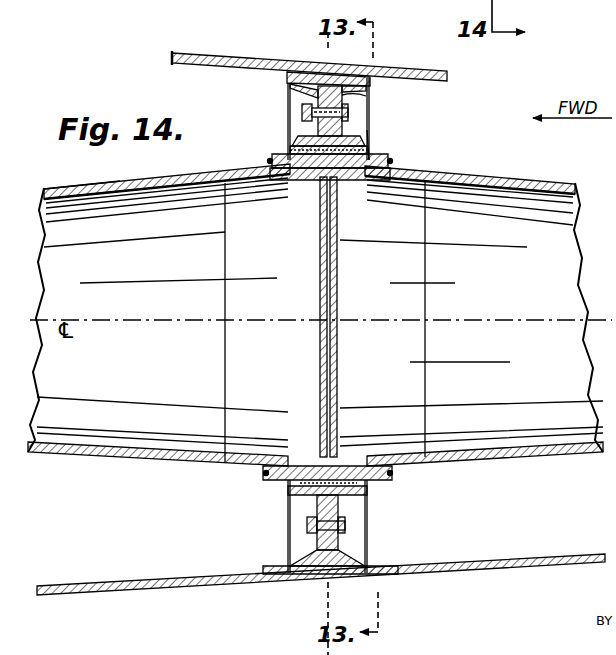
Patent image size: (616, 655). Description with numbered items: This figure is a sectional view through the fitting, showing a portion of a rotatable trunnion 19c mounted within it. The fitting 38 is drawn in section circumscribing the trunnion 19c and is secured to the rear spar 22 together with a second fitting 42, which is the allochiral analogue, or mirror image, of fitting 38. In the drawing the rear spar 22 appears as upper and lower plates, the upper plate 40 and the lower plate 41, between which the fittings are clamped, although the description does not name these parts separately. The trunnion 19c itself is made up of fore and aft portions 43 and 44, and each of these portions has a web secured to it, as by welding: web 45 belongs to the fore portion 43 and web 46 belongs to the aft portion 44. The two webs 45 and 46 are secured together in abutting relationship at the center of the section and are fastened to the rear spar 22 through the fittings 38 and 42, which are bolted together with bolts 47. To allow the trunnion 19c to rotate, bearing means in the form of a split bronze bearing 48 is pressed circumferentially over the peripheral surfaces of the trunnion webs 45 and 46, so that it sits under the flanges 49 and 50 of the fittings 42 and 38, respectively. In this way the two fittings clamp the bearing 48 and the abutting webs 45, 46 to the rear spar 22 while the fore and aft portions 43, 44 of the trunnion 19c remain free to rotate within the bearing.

The trunnion 19c is at (132, 172).
The rear spar 22 is at (315, 62).
The fitting 38 is at (342, 92).
The upper mounting plate 40 is at (450, 75).
The lower mounting plate 41 is at (455, 566).
The second fitting 42 is at (313, 91).
The fore portion 43 is at (188, 176).
The aft portion 44 is at (513, 186).
The web 45 is at (320, 260).
The web 46 is at (337, 229).
The bolts 47 is at (348, 114).
The split bronze bearing 48 is at (368, 162).
The flange 49 is at (304, 138).
The flange 50 is at (367, 138).